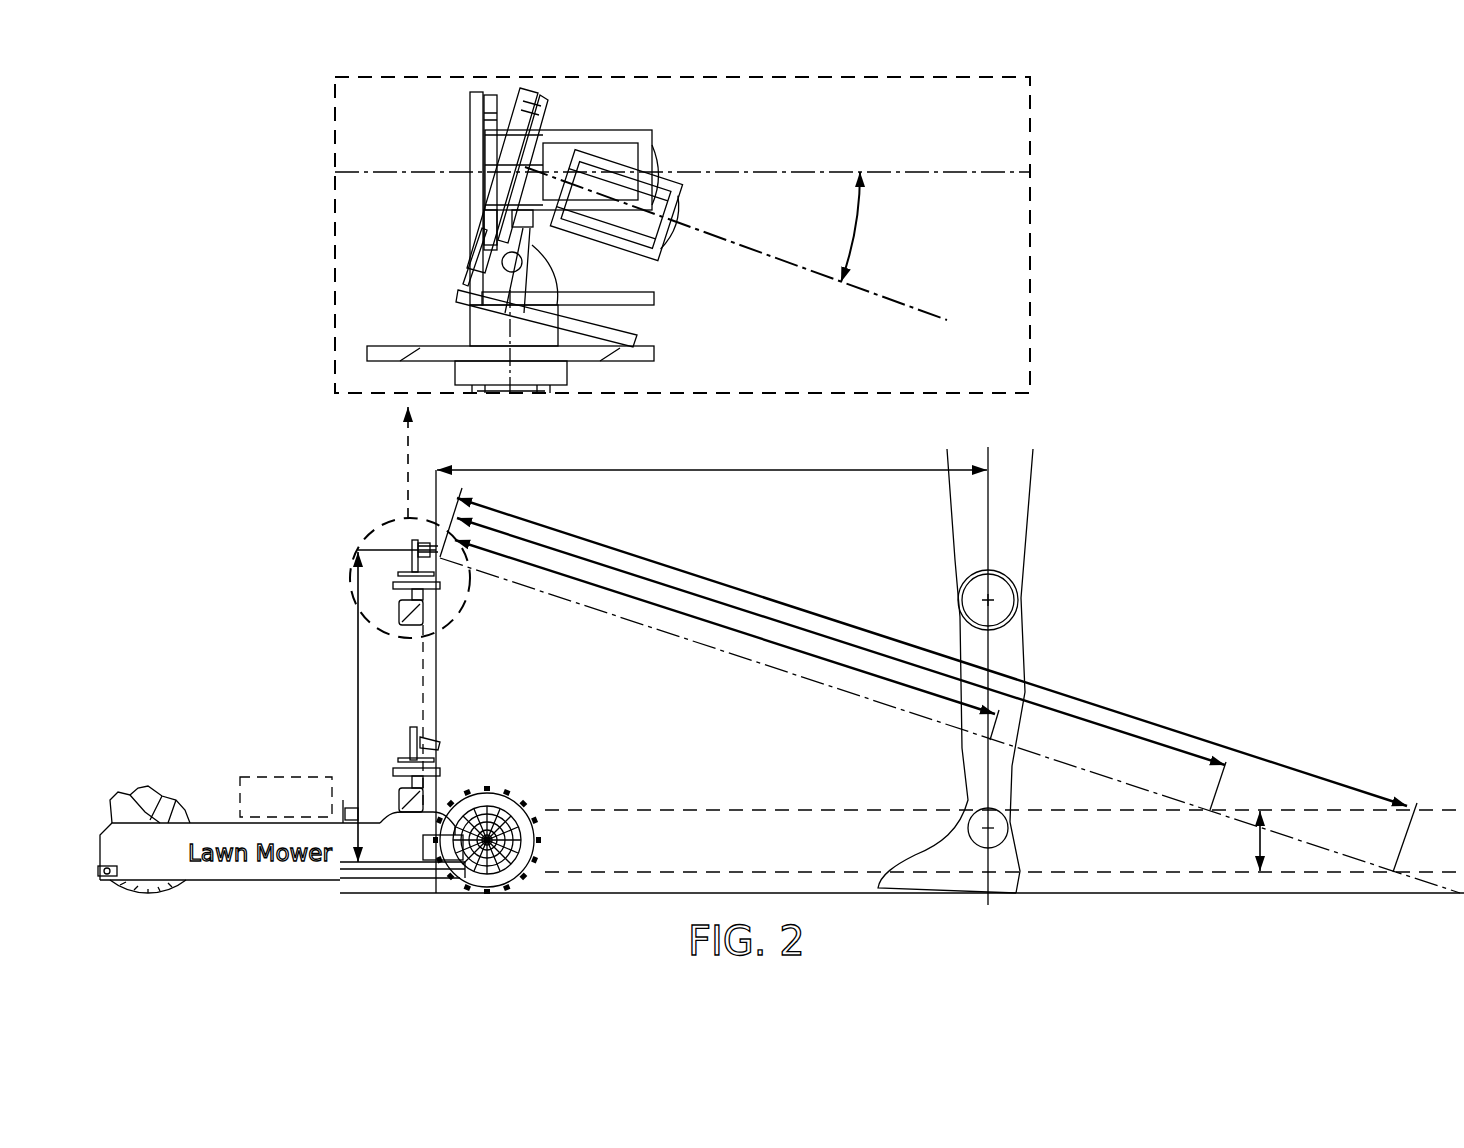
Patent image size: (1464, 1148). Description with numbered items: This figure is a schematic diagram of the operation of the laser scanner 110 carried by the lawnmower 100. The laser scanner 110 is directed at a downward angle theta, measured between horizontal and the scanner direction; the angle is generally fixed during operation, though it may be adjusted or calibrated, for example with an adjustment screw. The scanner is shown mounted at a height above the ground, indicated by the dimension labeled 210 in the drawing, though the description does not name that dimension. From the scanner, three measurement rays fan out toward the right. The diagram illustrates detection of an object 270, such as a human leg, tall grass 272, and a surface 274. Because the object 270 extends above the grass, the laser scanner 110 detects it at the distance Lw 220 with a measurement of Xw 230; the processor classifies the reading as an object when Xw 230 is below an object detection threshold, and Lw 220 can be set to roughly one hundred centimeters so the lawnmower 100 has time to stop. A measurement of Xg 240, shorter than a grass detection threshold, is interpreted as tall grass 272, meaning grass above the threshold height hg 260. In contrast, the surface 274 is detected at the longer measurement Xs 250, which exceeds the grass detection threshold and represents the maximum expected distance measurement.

The lawnmower 100 is at (260, 105).
The laser scanner 110 is at (622, 157).
The sensor mounting height h 210 is at (357, 665).
The distance Lw 220 is at (633, 470).
The measurement Xw 230 is at (687, 617).
The measurement Xg 240 is at (1130, 738).
The measurement Xs 250 is at (1273, 765).
The threshold height hg 260 is at (1263, 840).
The object 270 is at (1023, 636).
The tall grass 272 is at (1217, 790).
The surface 274 is at (1405, 840).